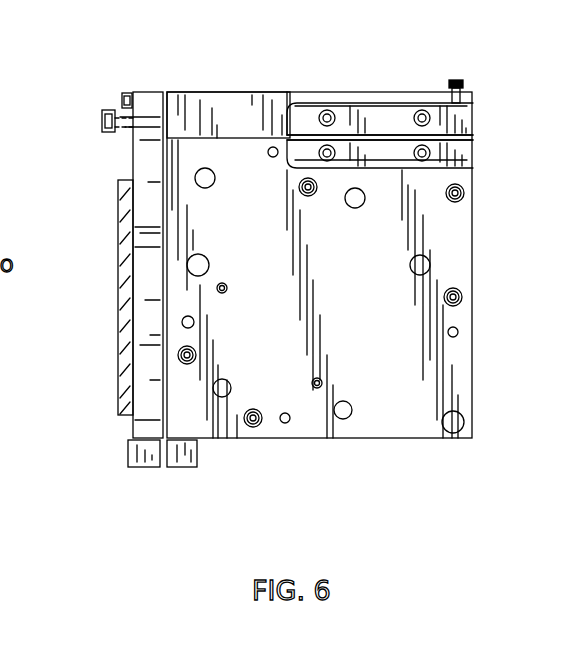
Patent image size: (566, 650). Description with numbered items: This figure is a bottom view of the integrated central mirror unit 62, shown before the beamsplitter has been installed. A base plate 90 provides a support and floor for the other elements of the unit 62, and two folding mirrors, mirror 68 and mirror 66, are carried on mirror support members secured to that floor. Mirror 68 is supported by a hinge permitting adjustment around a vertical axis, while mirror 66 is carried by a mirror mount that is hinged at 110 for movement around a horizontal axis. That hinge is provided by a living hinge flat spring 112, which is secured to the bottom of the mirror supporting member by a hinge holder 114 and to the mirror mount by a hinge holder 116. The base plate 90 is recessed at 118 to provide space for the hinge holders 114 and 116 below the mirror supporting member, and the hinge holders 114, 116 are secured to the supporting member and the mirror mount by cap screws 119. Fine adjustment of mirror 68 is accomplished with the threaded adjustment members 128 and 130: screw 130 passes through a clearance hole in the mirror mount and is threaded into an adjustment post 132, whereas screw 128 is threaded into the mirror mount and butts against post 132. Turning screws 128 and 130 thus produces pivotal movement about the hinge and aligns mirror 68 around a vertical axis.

The integrated central mirror unit 62 is at (482, 257).
The folding mirror 66 is at (417, 108).
The folding mirror 68 is at (118, 375).
The base plate 90 is at (396, 420).
The hinge 110 is at (477, 137).
The living hinge flat spring 112 is at (393, 137).
The hinge holder 114 is at (463, 155).
The hinge holder 116 is at (468, 117).
The recess 118 is at (289, 117).
The cap screws 119 is at (318, 146).
The threaded adjustment member 128 is at (102, 120).
The threaded adjustment member 130 is at (122, 100).
The adjustment post 132 is at (205, 92).